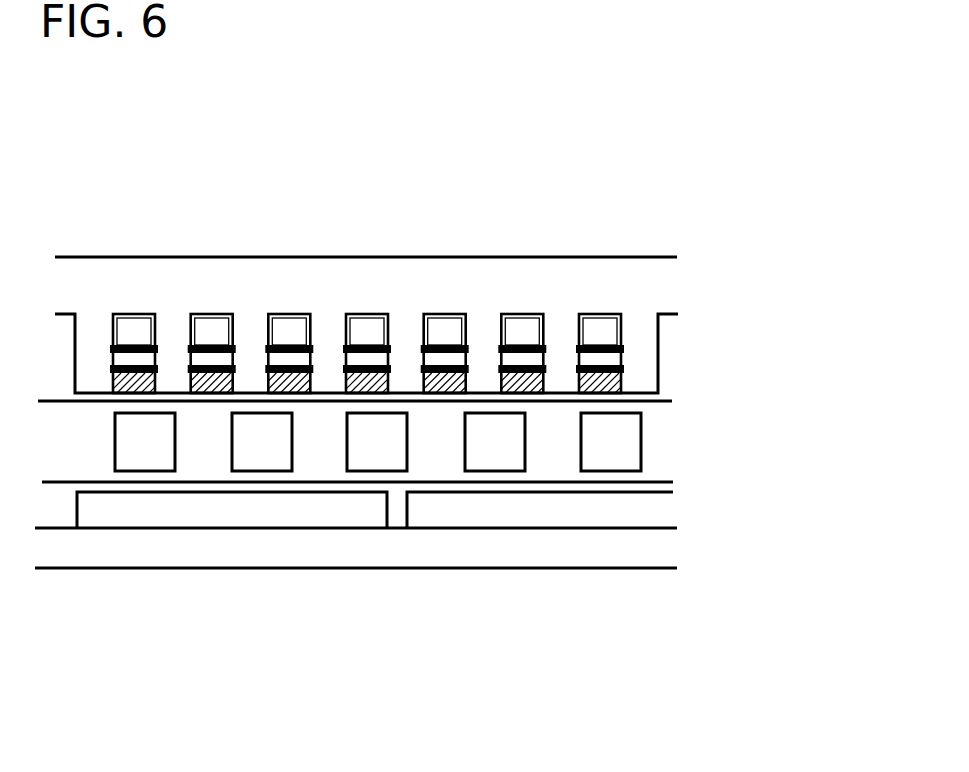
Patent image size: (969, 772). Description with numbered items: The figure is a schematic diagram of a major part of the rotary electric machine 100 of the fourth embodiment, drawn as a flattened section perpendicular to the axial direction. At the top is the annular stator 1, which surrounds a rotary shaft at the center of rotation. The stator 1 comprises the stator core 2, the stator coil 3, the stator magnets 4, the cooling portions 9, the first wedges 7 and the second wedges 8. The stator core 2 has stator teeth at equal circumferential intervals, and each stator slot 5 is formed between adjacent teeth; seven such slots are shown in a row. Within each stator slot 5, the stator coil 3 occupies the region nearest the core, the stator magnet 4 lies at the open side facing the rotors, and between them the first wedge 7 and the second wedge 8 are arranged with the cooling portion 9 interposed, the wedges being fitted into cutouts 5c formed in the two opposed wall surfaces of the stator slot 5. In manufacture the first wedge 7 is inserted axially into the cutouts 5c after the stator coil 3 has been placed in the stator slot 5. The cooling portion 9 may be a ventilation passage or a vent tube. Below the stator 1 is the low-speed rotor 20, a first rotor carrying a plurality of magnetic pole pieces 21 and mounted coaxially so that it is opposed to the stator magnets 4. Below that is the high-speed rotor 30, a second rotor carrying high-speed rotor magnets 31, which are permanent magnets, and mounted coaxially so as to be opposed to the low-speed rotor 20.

The rotary electric machine 100 is at (560, 174).
The stator 1 is at (662, 287).
The stator core 2 is at (113, 276).
The stator coil 3 is at (204, 330).
The stator magnet 4 is at (215, 385).
The stator slot 5 is at (354, 313).
The cutout 5c is at (389, 350).
The first wedge 7 is at (279, 348).
The second wedge 8 is at (291, 378).
The cooling portion 9 is at (363, 360).
The low-speed rotor 20 is at (662, 435).
The magnetic pole piece 21 is at (483, 447).
The high-speed rotor 30 is at (672, 537).
The high-speed rotor magnet 31 is at (293, 507).